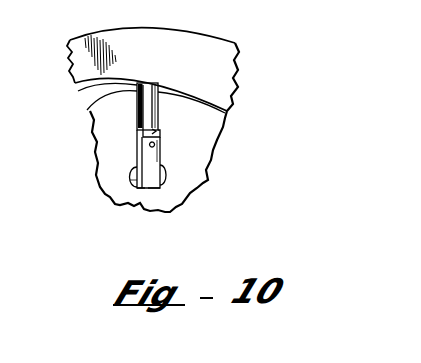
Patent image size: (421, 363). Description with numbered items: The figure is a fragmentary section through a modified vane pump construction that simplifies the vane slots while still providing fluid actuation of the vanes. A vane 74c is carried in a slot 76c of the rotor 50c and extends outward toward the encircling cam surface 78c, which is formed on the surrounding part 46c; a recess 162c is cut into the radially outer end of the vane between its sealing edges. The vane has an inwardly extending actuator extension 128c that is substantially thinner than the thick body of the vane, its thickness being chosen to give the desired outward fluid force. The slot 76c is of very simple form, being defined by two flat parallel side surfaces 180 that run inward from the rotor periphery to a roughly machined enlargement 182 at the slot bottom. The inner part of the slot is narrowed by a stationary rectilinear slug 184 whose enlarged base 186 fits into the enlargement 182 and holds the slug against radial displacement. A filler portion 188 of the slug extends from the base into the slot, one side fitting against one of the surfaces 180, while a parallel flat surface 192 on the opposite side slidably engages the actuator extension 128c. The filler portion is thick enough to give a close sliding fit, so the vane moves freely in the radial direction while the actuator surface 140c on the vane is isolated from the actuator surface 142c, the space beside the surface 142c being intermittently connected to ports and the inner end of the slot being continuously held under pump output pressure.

The tire carcass / casing band 46c is at (219, 60).
The rotor 50c is at (222, 127).
The cam surface 78c is at (79, 91).
The vane 74c is at (133, 109).
The slot 76c is at (157, 110).
The recess 162c is at (148, 82).
The actuator surface 142c is at (158, 135).
The actuator extension 128c is at (138, 152).
The flat parallel side surfaces 180 is at (140, 118).
The actuator surface 140c is at (134, 168).
The flat surface 192 is at (135, 184).
The enlargement 182 is at (139, 188).
The enlarged base 186 is at (153, 182).
The slug 184 is at (162, 180).
The filler portion 188 is at (152, 153).